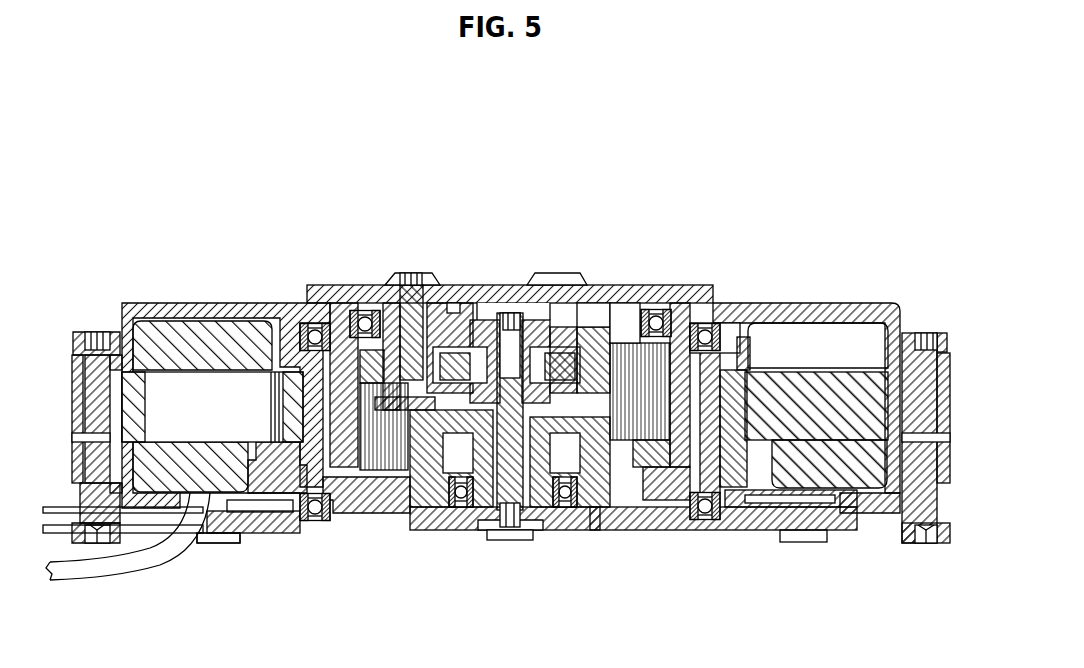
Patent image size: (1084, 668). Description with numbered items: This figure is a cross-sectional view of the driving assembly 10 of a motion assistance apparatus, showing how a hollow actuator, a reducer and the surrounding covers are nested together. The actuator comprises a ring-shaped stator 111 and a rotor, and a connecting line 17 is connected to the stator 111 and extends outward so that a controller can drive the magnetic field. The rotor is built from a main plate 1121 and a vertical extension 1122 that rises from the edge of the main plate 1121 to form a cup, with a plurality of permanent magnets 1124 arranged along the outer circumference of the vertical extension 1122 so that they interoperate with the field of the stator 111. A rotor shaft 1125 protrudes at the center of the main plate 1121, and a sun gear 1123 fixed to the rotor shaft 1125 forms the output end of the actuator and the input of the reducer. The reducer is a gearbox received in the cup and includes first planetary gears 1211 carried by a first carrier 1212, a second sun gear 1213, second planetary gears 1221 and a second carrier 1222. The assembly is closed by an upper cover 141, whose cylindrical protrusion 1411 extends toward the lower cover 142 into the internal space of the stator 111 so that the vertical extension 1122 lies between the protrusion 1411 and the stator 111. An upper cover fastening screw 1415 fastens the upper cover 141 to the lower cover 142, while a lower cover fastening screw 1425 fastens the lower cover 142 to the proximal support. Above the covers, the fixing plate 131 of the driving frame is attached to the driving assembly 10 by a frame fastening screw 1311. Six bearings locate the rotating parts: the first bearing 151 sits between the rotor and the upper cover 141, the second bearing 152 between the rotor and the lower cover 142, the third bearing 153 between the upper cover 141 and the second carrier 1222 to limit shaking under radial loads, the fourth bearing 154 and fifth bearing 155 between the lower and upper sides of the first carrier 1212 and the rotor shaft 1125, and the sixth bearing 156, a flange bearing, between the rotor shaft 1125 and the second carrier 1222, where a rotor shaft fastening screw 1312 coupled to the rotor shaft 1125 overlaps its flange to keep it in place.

The driving assembly 10 is at (512, 108).
The connecting line 17 is at (108, 570).
The stator 111 is at (820, 473).
The fixing plate 131 is at (615, 290).
The upper cover 141 is at (848, 310).
The lower cover 142 is at (848, 527).
The first bearing 151 is at (290, 327).
The second bearing 152 is at (307, 520).
The third bearing 153 is at (657, 323).
The fourth bearing 154 is at (473, 423).
The fifth bearing 155 is at (410, 490).
The sixth bearing 156 is at (478, 318).
The main plate 1121 is at (583, 530).
The vertical extension 1122 is at (707, 487).
The sun gear 1123 is at (533, 493).
The permanent magnets 1124 is at (240, 533).
The rotor shaft 1125 is at (482, 518).
The first planetary gears 1211 is at (630, 473).
The first carrier 1212 is at (585, 355).
The second sun gear 1213 is at (550, 355).
The second planetary gears 1221 is at (317, 323).
The second carrier 1222 is at (392, 310).
The frame fastening screw 1311 is at (425, 273).
The rotor shaft fastening screw 1312 is at (510, 322).
The protrusion 1411 is at (740, 337).
The upper cover fastening screw 1415 is at (928, 360).
The lower cover fastening screw 1425 is at (923, 537).